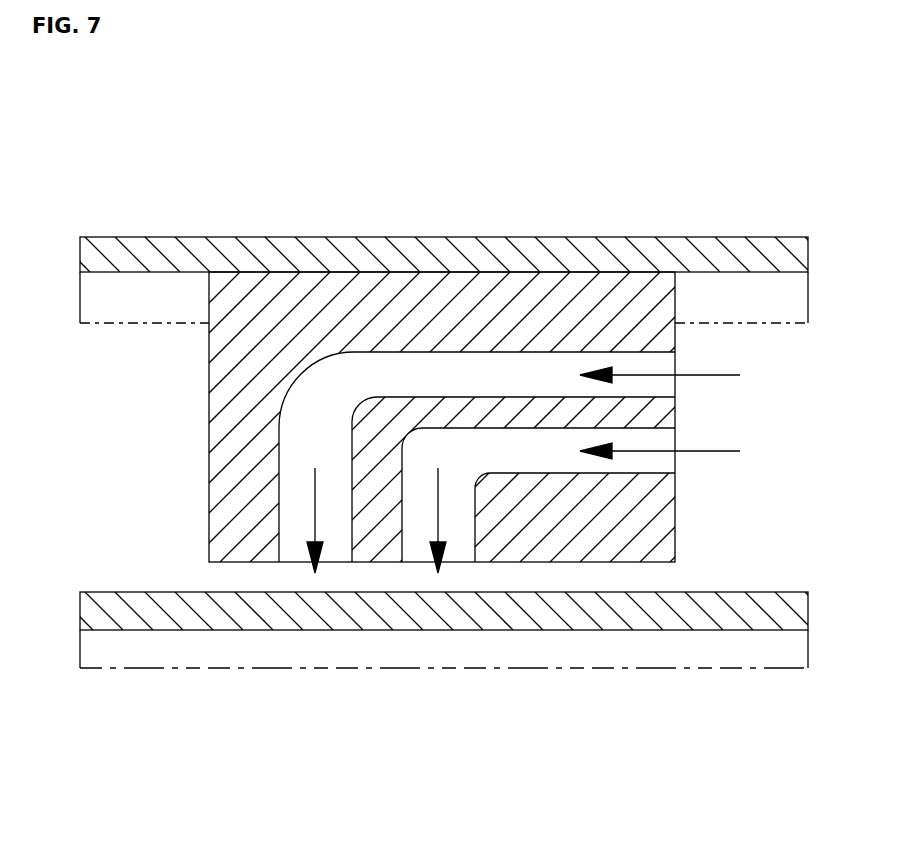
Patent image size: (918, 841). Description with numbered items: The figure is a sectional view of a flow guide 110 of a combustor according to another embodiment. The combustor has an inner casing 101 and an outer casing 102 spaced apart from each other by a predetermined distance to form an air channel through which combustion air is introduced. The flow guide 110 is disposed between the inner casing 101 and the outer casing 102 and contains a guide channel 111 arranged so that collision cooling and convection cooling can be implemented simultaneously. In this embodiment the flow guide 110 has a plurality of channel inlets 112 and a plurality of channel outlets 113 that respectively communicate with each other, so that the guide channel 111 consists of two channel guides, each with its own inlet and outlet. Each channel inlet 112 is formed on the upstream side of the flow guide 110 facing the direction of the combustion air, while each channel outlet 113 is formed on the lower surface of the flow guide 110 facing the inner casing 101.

The inner casing 101 is at (147, 617).
The outer casing 102 is at (150, 256).
The flow guide 110 is at (232, 405).
The guide channel 111 is at (477, 445).
The channel inlet 112 is at (660, 383).
The channel outlet 113 is at (295, 543).